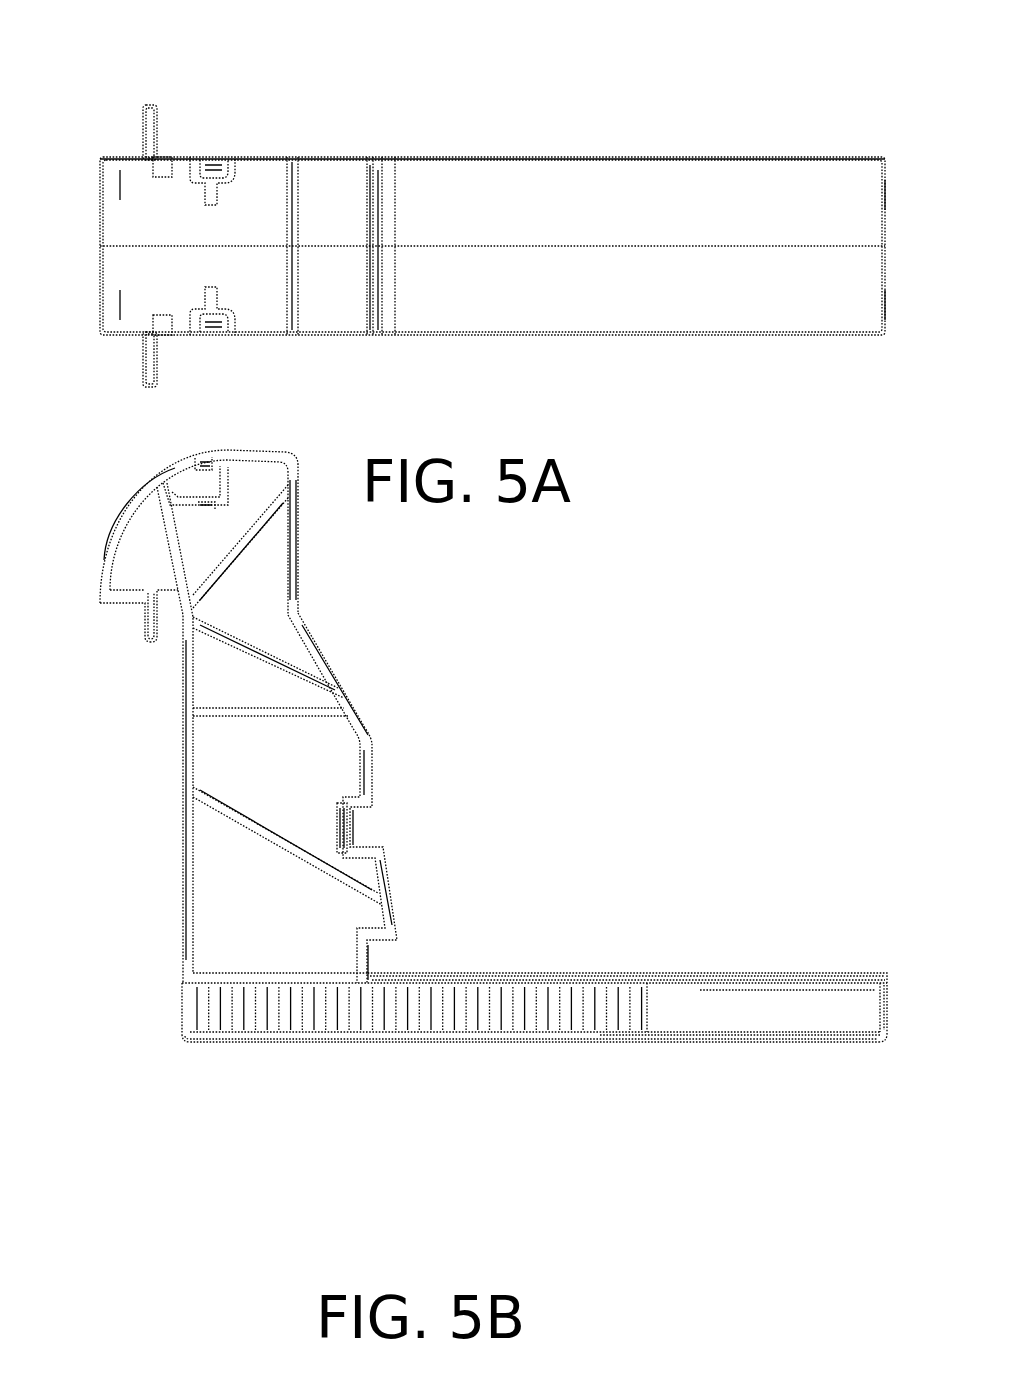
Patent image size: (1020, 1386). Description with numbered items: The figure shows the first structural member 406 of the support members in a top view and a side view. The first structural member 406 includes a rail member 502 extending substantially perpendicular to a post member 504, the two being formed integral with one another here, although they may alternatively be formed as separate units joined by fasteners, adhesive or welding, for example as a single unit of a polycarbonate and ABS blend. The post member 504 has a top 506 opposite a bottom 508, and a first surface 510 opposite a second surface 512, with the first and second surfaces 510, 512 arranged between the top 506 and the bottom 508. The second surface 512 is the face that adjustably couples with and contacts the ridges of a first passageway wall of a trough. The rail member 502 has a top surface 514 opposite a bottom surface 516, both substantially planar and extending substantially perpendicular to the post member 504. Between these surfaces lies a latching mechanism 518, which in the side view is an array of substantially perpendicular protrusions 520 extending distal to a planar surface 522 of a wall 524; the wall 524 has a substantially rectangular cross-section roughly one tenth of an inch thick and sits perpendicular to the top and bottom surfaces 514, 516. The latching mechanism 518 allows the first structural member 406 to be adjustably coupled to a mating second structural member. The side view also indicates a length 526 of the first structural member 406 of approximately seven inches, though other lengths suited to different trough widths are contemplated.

In FIG. 5A, the first structural member 406 is at (98, 42).
In FIG. 5A, the rail member 502 is at (882, 337).
In FIG. 5B, the rail member 502 is at (887, 1045).
In FIG. 5A, the post member 504 is at (127, 100).
In FIG. 5B, the post member 504 is at (227, 445).
In FIG. 5A, the top 506 is at (180, 210).
In FIG. 5B, the top 506 is at (275, 442).
In FIG. 5B, the bottom 508 is at (243, 957).
In FIG. 5B, the first surface 510 is at (170, 776).
In FIG. 5B, the second surface 512 is at (385, 778).
In FIG. 5B, the top surface 514 is at (663, 958).
In FIG. 5B, the bottom surface 516 is at (665, 1060).
In FIG. 5B, the latching mechanism 518 is at (660, 1007).
In FIG. 5B, the substantially perpendicular protrusions 520 is at (648, 1045).
In FIG. 5B, the planar surface 522 is at (820, 1005).
In FIG. 5B, the wall 524 is at (885, 1005).
In FIG. 5B, the length 526 is at (872, 1133).